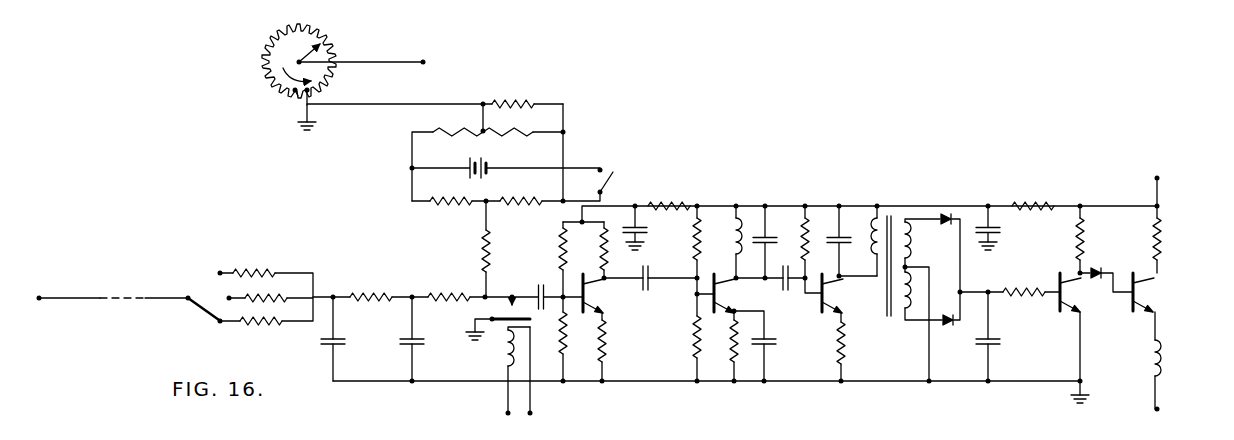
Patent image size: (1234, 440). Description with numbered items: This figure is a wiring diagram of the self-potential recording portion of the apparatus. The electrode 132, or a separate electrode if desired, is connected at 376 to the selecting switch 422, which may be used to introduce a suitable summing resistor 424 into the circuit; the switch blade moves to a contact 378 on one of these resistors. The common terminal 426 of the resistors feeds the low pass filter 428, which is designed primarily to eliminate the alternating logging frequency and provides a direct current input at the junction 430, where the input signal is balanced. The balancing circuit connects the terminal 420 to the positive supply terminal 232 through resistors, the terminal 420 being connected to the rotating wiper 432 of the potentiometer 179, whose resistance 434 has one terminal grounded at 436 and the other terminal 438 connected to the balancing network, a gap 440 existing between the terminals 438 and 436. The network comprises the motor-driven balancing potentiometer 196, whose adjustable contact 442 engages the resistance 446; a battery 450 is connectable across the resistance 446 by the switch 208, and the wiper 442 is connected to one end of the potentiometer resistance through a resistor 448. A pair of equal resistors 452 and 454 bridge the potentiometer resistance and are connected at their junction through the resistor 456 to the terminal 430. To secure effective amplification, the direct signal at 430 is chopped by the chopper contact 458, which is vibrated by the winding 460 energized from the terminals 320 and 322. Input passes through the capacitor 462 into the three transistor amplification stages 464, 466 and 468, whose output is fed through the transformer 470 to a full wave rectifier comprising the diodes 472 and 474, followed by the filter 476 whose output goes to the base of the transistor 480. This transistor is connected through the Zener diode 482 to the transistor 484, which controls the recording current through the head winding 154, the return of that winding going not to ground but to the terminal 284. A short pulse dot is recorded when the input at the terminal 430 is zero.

The electrode 132 is at (40, 303).
The head winding 154 is at (1150, 350).
The potentiometer 179 is at (256, 73).
The balancing potentiometer 196 is at (538, 120).
The switch 208 is at (613, 182).
The positive supply terminal 232 is at (1158, 176).
The terminal 284 is at (1160, 409).
The terminal 320 is at (507, 414).
The terminal 322 is at (533, 414).
The connection 376 is at (132, 296).
The switch contact 378 is at (203, 310).
The terminal 420 is at (426, 60).
The selecting switch 422 is at (201, 290).
The summing resistor 424 is at (288, 319).
The common terminal 426 is at (317, 296).
The low pass filter 428 is at (374, 358).
The junction 430 is at (484, 294).
The wiper 432 is at (315, 51).
The resistance 434 is at (270, 45).
The grounded terminal 436 is at (311, 113).
The terminal 438 is at (291, 92).
The gap 440 is at (304, 97).
The adjustable contact 442 is at (480, 130).
The resistance 446 is at (466, 137).
The resistor 448 is at (512, 100).
The battery 450 is at (485, 176).
The resistor 452 is at (456, 203).
The resistor 454 is at (525, 203).
The resistor 456 is at (490, 247).
The chopper contact 458 is at (490, 318).
The winding 460 is at (504, 354).
The capacitor 462 is at (538, 291).
The transistor amplification stage 464 is at (627, 352).
The transistor amplification stage 466 is at (782, 352).
The transistor amplification stage 468 is at (871, 342).
The transformer 470 is at (900, 214).
The diode 472 is at (955, 328).
The diode 474 is at (951, 214).
The filter 476 is at (1016, 340).
The transistor 480 is at (1057, 271).
The Zener diode 482 is at (1098, 267).
The transistor 484 is at (1150, 290).